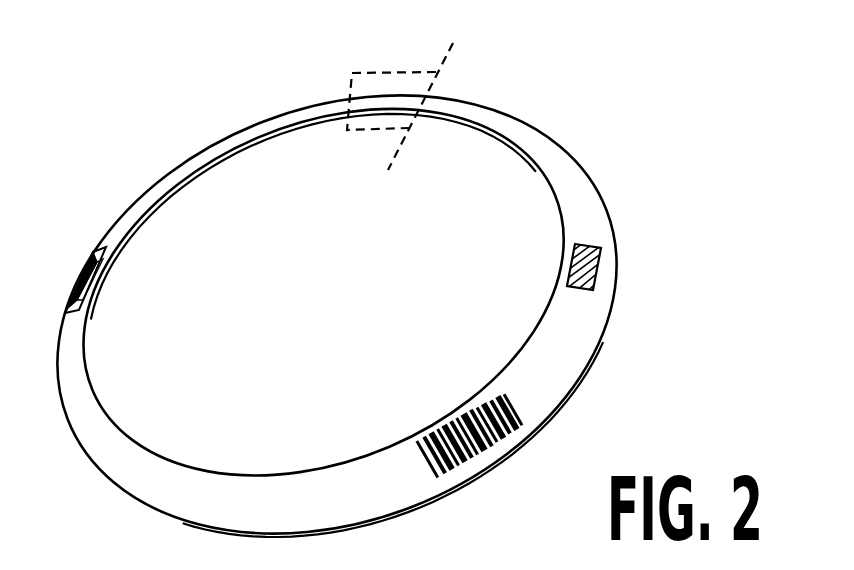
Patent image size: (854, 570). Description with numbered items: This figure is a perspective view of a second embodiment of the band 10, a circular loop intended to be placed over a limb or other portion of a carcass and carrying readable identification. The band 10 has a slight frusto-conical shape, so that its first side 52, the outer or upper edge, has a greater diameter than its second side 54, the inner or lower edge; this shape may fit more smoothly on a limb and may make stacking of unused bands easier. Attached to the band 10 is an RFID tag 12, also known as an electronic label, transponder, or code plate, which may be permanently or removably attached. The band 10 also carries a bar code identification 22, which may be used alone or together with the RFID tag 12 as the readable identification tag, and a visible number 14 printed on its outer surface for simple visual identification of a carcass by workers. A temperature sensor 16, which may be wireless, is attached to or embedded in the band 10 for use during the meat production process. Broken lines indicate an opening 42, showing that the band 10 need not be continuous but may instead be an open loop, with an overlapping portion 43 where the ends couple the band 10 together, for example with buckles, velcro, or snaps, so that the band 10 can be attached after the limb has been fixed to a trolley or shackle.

The band 10 is at (340, 293).
The RFID tag 12 is at (82, 268).
The visible number 14 is at (147, 503).
The temperature sensor 16 is at (598, 258).
The bar code identification 22 is at (488, 432).
The opening 42 is at (443, 78).
The overlapping portion 43 is at (362, 73).
The first side 52 is at (590, 364).
The second side 54 is at (511, 357).